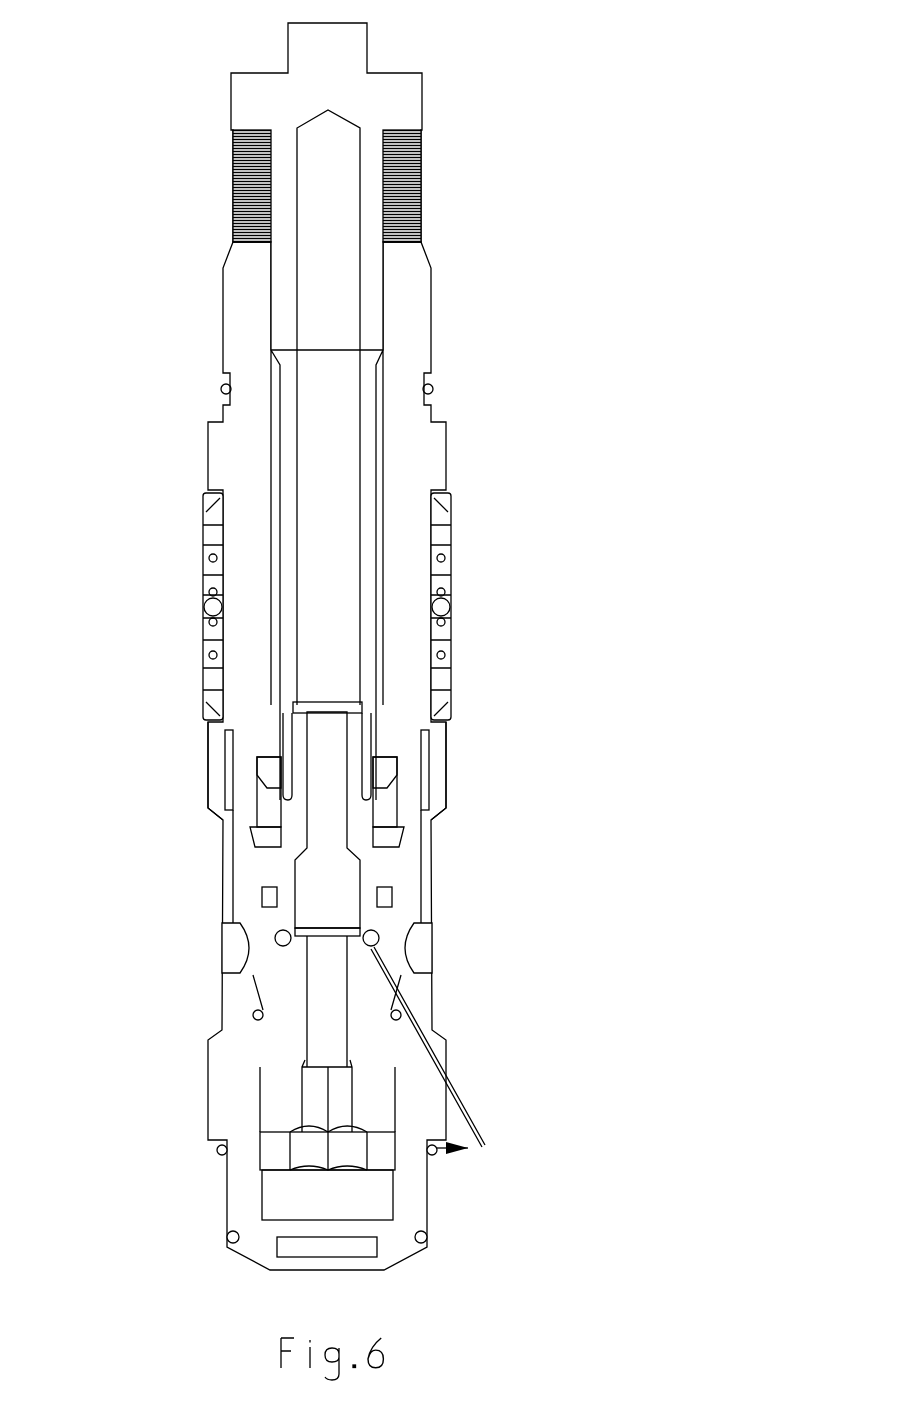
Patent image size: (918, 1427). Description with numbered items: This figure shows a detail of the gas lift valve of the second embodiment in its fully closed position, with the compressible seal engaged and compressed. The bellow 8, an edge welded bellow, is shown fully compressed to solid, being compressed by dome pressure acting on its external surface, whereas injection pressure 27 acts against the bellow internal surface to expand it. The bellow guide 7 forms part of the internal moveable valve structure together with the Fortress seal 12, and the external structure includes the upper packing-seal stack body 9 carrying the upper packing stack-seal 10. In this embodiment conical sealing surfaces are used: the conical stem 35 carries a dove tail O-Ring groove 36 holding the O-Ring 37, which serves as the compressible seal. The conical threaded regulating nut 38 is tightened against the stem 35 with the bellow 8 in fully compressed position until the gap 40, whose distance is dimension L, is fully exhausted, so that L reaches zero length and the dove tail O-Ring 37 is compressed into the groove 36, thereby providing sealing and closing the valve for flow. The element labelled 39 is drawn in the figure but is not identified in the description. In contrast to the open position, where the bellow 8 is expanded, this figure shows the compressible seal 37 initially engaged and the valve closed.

The bellow guide 7 is at (434, 97).
The bellow 8 is at (427, 182).
The upper packing-seal stack body 9 is at (441, 304).
The upper packing stack-seal 10 is at (452, 596).
The Fortress seal 12 is at (403, 764).
The conical stem 35 is at (447, 805).
The dove tail O-Ring groove 36 is at (393, 931).
The O-Ring 37 is at (262, 925).
The injection pressure 27 is at (233, 947).
The conical threaded regulating nut 38 is at (263, 979).
The o-ring 39 is at (245, 1015).
The gap 40 is at (556, 848).
The dimension L is at (487, 1132).